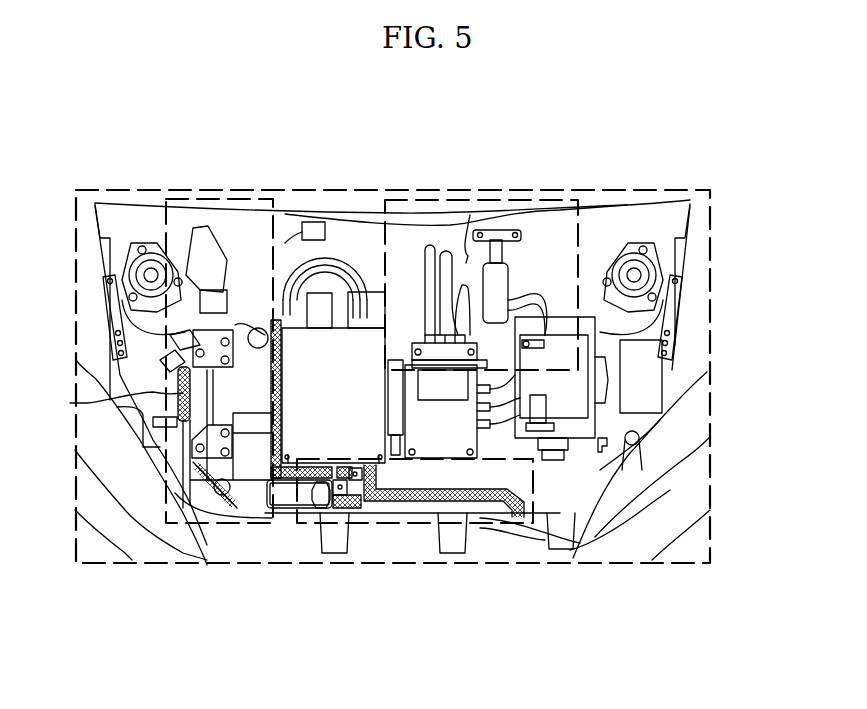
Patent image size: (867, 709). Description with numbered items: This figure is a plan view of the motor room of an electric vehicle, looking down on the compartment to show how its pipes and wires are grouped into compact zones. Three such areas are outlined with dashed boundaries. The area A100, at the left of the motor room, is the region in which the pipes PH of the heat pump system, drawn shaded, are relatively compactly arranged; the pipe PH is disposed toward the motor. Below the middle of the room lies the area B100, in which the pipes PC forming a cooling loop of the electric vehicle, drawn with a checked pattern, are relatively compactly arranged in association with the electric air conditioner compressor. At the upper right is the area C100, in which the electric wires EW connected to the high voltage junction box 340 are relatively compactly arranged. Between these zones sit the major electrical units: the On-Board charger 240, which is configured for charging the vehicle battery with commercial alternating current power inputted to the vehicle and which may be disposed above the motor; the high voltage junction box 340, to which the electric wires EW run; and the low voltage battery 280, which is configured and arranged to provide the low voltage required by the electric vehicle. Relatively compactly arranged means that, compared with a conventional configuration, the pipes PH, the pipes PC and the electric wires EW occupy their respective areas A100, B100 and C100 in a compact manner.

The area A100 is at (178, 500).
The area B100 is at (490, 515).
The area C100 is at (563, 360).
The On-Board charger 240 is at (312, 428).
The high voltage junction box 340 is at (437, 433).
The low voltage battery 280 is at (555, 458).
The pipe PH is at (70, 403).
The electric wires EW is at (468, 256).
The pipes PC is at (450, 465).